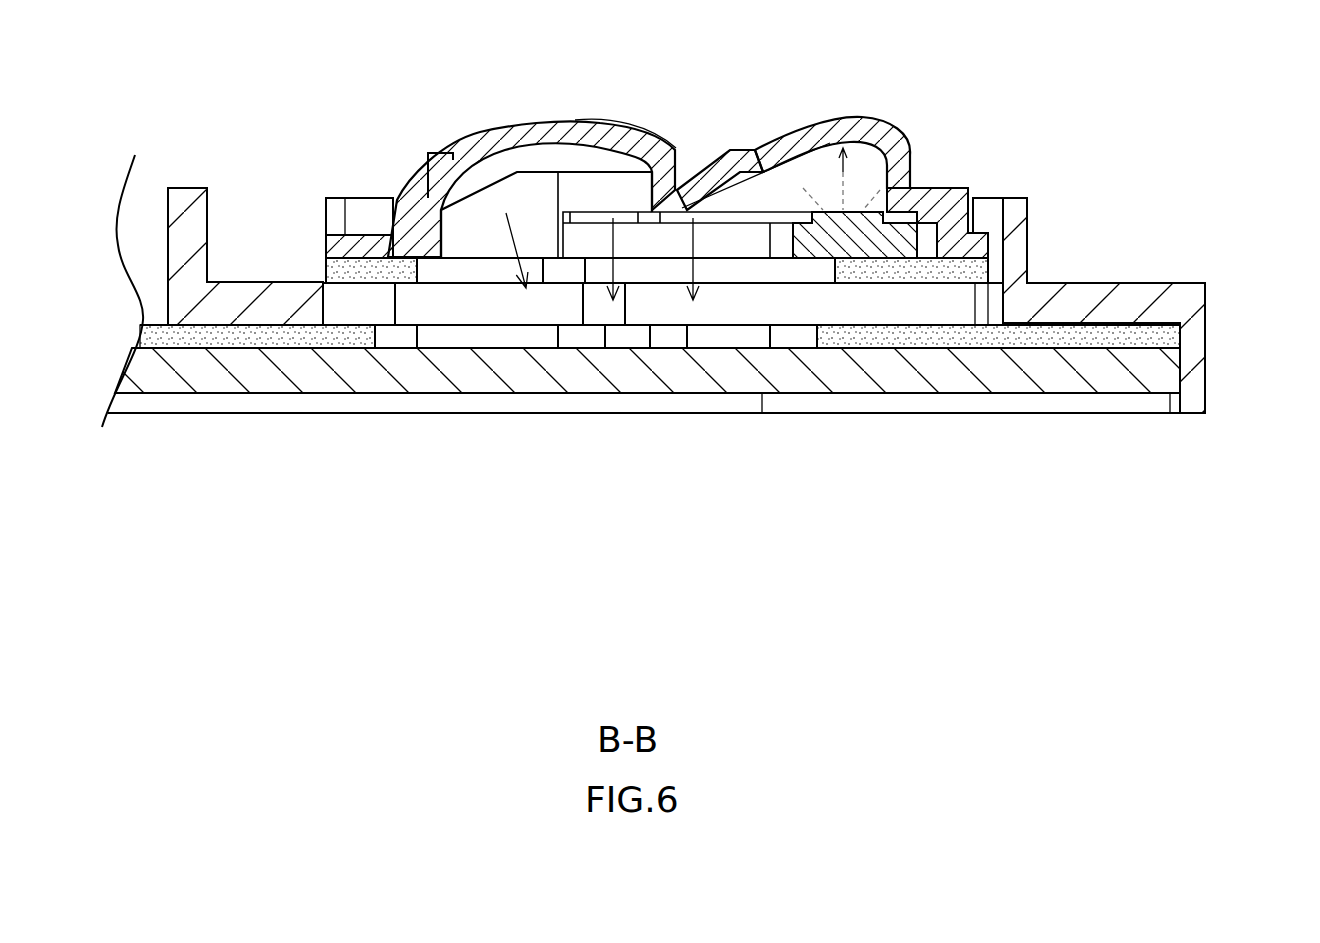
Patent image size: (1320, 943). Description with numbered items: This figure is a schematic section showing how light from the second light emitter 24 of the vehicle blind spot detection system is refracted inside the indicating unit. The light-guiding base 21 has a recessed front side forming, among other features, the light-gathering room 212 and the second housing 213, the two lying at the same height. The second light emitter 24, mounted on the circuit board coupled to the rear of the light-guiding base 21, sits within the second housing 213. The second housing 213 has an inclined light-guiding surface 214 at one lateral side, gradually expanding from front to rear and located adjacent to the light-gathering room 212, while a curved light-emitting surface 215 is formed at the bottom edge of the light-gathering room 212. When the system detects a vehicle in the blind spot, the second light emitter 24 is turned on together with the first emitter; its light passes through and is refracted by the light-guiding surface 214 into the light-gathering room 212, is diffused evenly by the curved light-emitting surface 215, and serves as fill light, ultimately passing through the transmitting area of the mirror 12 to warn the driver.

The mirror 12 is at (1153, 370).
The light-guiding base 21 is at (338, 247).
The light-gathering room 212 is at (575, 163).
The second housing 213 is at (867, 147).
The light-guiding surface 214 is at (727, 148).
The curved light-emitting surface 215 is at (487, 207).
The second light emitter 24 is at (905, 193).